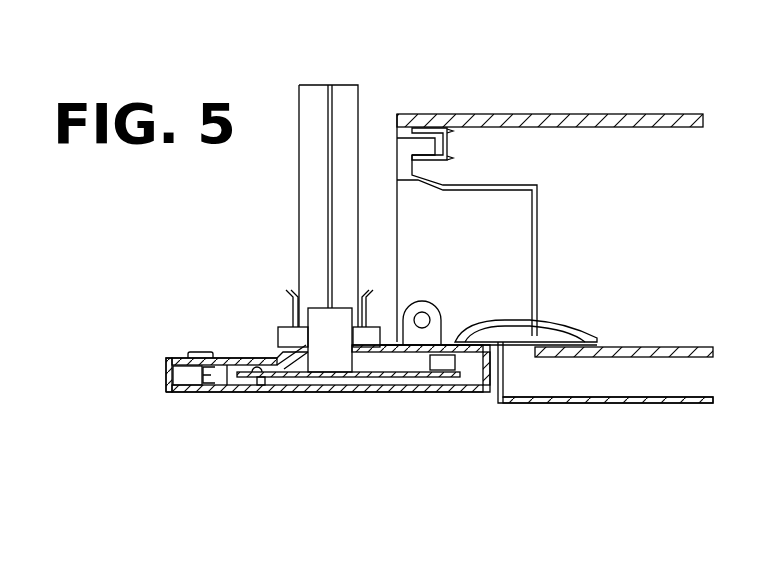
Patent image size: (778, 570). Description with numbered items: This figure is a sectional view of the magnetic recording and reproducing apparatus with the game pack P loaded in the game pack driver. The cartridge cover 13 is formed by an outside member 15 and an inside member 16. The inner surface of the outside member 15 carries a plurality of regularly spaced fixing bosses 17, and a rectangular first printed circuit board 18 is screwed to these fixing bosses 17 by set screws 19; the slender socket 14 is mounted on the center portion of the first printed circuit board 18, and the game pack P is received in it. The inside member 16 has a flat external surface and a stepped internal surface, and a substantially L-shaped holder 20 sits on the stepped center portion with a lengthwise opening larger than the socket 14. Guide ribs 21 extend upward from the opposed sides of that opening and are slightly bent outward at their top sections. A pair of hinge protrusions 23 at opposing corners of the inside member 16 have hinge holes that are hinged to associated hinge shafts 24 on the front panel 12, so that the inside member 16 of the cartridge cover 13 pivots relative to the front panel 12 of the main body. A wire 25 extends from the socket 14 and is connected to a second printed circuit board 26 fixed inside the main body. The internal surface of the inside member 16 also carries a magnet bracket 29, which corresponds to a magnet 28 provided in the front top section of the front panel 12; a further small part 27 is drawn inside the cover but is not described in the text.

The game pack P is at (314, 84).
The front panel 12 is at (493, 114).
The cartridge cover 13 is at (165, 368).
The socket 14 is at (325, 393).
The outside member 15 is at (170, 393).
The inside member 16 is at (240, 357).
The fixing bosses 17 is at (252, 393).
The first printed circuit board 18 is at (369, 393).
The set screws 19 is at (265, 360).
The holder 20 is at (262, 393).
The guide ribs 21 is at (291, 293).
The hinge protrusions 23 is at (443, 312).
The hinge shafts 24 is at (424, 300).
The wire 25 is at (497, 320).
The second printed circuit board 26 is at (659, 346).
The retaining clip 27 is at (208, 393).
The magnet 28 is at (400, 147).
The magnet bracket 29 is at (192, 352).